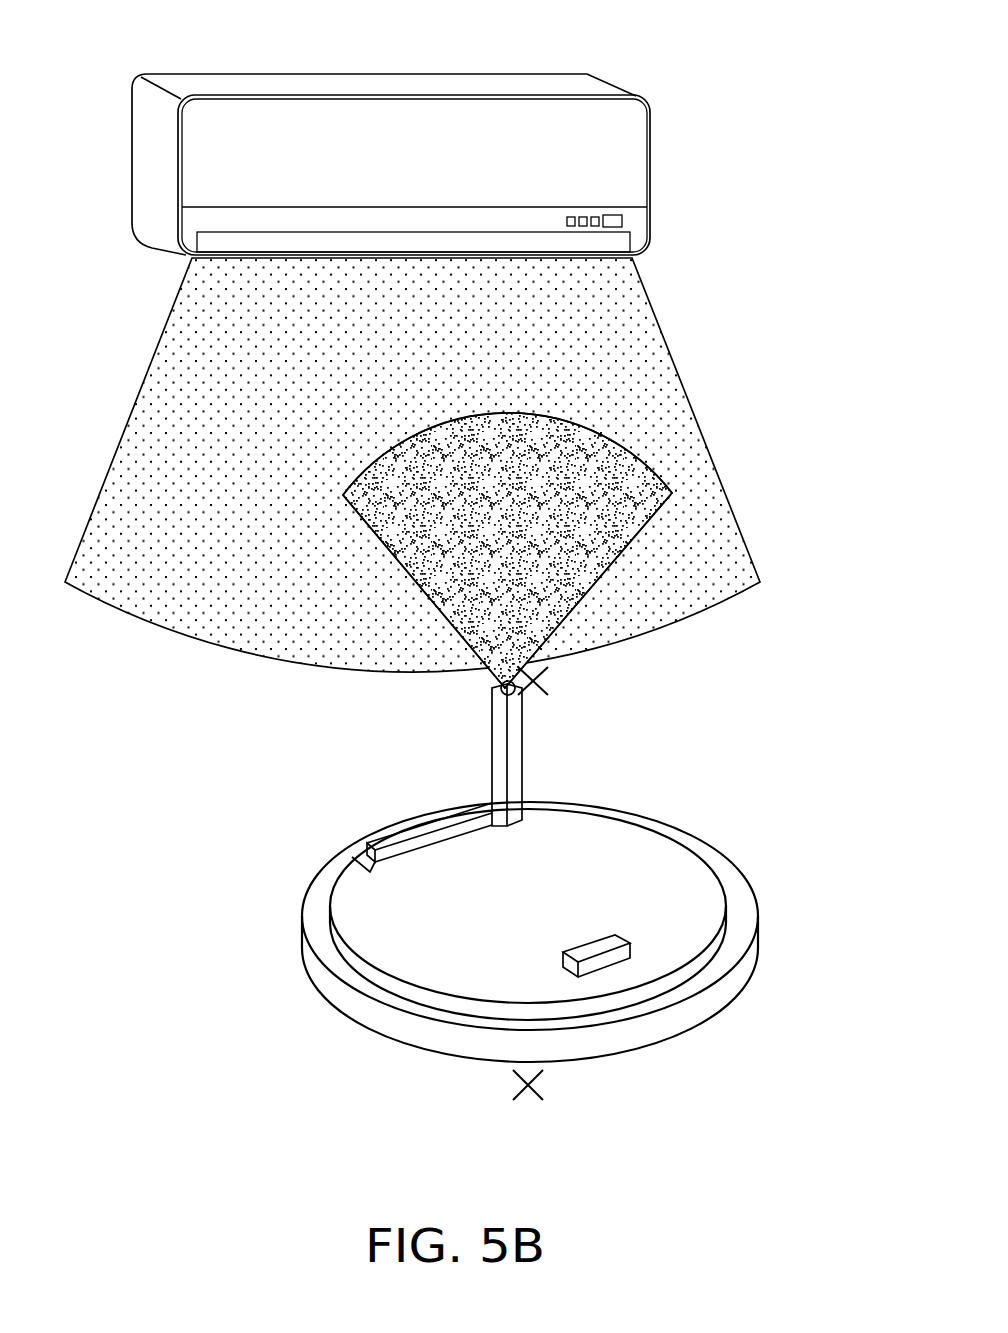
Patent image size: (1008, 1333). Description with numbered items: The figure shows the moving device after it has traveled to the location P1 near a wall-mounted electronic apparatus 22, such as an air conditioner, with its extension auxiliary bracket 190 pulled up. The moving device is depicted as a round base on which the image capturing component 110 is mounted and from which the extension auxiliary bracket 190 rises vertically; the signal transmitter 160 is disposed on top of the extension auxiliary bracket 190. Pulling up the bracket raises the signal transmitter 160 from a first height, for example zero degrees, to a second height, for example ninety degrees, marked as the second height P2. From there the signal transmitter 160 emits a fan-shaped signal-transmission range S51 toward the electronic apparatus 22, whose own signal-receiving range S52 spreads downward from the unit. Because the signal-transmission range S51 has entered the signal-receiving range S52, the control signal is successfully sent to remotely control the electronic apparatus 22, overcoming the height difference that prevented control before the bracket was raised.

The electronic apparatus 22 is at (468, 86).
The signal-receiving range S52 is at (639, 399).
The signal-transmission range S51 is at (442, 574).
The signal transmitter 160 is at (500, 694).
The extension auxiliary bracket 190 is at (518, 752).
The image capturing component 110 is at (602, 945).
The location P1 is at (532, 1104).
The second height P2 is at (554, 681).